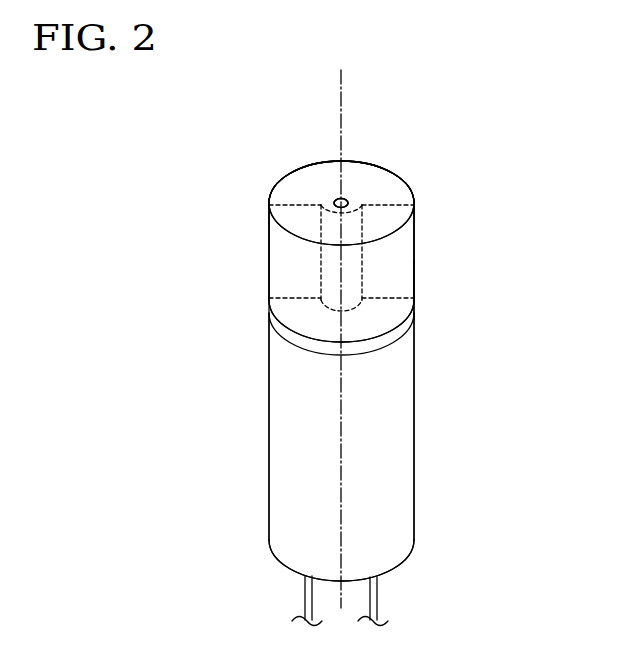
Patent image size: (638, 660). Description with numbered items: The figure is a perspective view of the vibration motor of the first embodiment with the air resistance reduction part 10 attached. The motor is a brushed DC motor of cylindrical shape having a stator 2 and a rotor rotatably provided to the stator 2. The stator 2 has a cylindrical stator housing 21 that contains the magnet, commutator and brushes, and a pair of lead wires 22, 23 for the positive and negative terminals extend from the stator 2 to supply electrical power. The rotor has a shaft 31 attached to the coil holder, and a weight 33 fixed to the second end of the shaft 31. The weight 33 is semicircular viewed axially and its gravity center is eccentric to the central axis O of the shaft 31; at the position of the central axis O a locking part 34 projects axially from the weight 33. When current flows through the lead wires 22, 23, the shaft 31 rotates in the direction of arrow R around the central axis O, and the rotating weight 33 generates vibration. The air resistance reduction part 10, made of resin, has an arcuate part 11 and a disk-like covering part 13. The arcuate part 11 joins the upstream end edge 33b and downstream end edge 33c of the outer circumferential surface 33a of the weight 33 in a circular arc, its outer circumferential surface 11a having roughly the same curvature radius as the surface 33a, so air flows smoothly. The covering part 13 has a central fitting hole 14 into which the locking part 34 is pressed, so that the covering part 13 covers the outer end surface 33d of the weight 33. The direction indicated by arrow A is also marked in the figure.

The stator 2 is at (422, 413).
The air resistance reduction part 10 is at (282, 165).
The arcuate part 11 is at (414, 275).
The outer circumferential surface of the arcuate part 11a is at (414, 293).
The covering part 13 is at (293, 192).
The fitting hole 14 is at (334, 200).
The stator housing 21 is at (400, 478).
The lead wire 22 is at (305, 601).
The lead wire 23 is at (378, 598).
The shaft 31 is at (333, 313).
The weight 33 is at (405, 176).
The outer circumferential surface of the weight 33a is at (413, 193).
The end edge on the upstream side 33b is at (269, 246).
The end edge on the downstream side 33c is at (413, 228).
The outer end surface of the weight 33d is at (288, 198).
The locking part 34 is at (348, 201).
The central axis O is at (342, 85).
The arrow R is at (366, 112).
The viewing direction arrow A is at (424, 252).